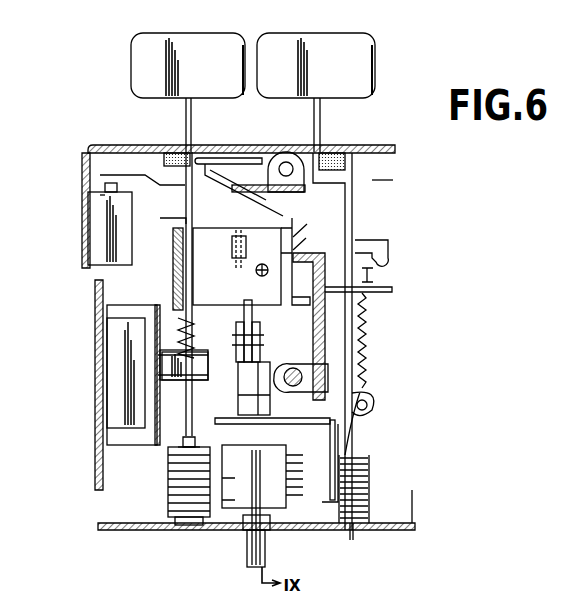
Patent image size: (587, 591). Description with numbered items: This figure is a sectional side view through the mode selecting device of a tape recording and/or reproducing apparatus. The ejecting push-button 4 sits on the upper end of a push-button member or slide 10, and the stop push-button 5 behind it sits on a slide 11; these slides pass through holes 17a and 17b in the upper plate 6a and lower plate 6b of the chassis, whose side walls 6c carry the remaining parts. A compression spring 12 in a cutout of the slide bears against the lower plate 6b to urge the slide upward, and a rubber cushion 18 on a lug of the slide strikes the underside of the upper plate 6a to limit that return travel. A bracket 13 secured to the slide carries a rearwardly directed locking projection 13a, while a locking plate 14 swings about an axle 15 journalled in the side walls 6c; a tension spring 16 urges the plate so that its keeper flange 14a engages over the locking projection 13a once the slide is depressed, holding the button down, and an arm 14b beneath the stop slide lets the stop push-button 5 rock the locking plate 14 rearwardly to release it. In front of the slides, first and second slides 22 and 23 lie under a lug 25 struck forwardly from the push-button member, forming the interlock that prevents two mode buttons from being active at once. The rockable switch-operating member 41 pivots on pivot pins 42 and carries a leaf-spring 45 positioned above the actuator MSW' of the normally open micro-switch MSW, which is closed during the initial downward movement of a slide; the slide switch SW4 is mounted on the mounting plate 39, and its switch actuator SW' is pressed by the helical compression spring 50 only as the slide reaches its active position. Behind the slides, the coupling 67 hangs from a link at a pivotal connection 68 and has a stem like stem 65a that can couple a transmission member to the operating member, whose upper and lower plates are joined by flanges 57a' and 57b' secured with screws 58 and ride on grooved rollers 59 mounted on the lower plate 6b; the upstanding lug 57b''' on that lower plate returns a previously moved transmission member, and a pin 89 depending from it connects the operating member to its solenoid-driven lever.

The push-button 4 is at (135, 75).
The stop push-button 5 is at (365, 65).
The push-button member 10 is at (185, 118).
The hole 17a is at (193, 150).
The pivot pin 42 is at (287, 153).
The upper plate 6a is at (370, 145).
The leaf-spring 45 is at (104, 150).
The rubber cushion 18 is at (166, 153).
The side wall 6c is at (399, 183).
The push-button member 11 is at (349, 209).
The bracket 13 is at (275, 232).
The locking projection 13a is at (306, 241).
The switch-operating member 41 is at (278, 196).
The second slide 23 is at (232, 242).
The first slide 22 is at (184, 270).
The lug 25 is at (170, 238).
The keeper flange 14a is at (293, 273).
The arm 14b is at (380, 290).
The locking plate 14 is at (312, 326).
The axle 15 is at (305, 372).
The tension spring 16 is at (366, 320).
The helical compression spring 50 is at (183, 318).
The pivotal connection 68 is at (238, 342).
The coupling 67 is at (260, 373).
The stem 65a is at (283, 412).
The mounting plate 39 is at (160, 395).
The flange 57a' is at (383, 423).
The screw 58 is at (337, 460).
The compression spring 12 is at (362, 476).
The grooved roller 59 is at (168, 481).
The lower plate 6b is at (140, 531).
The upstanding lug 57b''' is at (218, 522).
The pin 89 is at (265, 548).
The flange 57b' is at (291, 506).
The hole 17b is at (356, 535).
The slide switch SW4 is at (113, 392).
The switch actuator SW' is at (200, 386).
The micro-switch MSW is at (72, 228).
The actuator MSW' is at (98, 186).